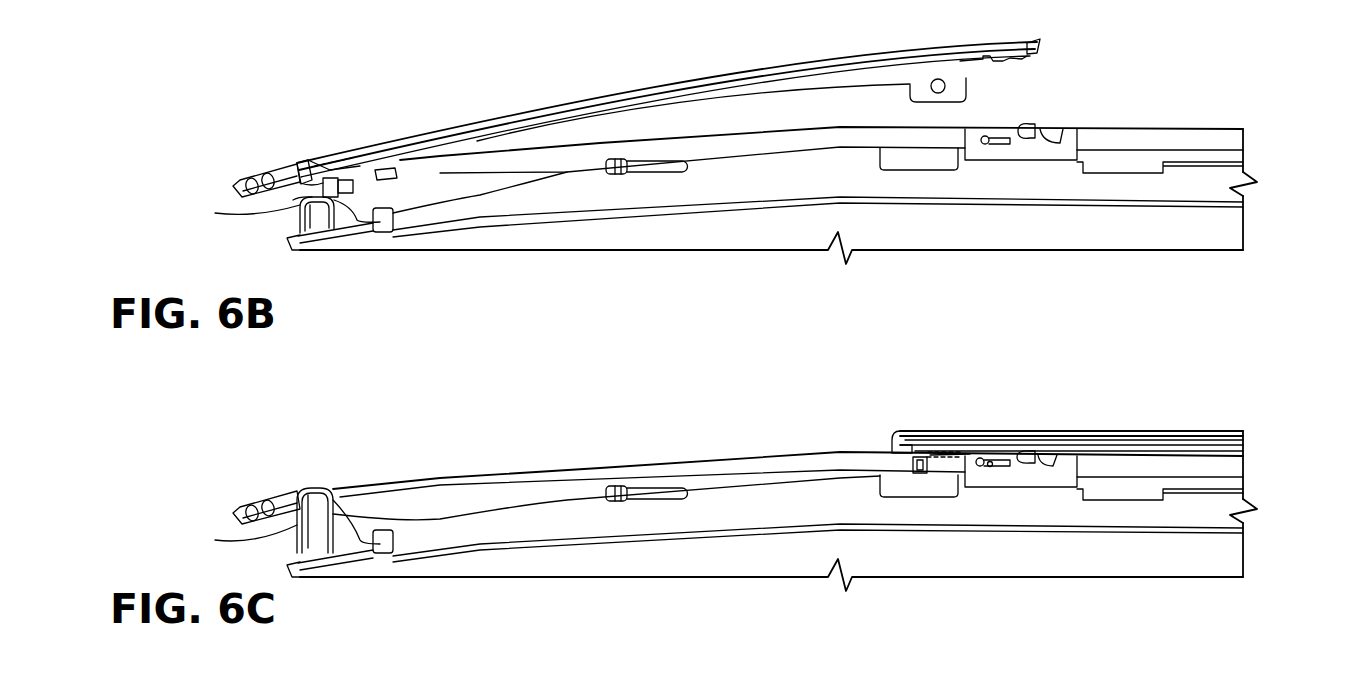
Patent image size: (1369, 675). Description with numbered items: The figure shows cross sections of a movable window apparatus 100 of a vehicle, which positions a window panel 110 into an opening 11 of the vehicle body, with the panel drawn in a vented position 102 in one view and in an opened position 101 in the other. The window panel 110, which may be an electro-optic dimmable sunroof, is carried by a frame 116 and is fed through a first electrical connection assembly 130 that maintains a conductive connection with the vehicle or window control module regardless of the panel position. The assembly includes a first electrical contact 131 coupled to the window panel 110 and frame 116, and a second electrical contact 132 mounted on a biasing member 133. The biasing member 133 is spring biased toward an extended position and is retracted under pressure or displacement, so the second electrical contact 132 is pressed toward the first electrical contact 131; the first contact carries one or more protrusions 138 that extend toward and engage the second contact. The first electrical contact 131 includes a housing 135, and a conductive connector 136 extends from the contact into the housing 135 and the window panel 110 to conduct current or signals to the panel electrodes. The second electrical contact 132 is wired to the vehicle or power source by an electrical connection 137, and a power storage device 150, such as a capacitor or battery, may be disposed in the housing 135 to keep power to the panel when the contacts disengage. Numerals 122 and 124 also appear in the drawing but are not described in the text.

In FIG. 6B, the opening 11 is at (1007, 213).
In FIG. 6C, the opening 11 is at (1005, 538).
In FIG. 6B, the movable window apparatus 100 is at (1141, 92).
In FIG. 6C, the movable window apparatus 100 is at (1141, 417).
In FIG. 6C, the opened position 101 is at (653, 474).
In FIG. 6B, the vented position 102 is at (653, 177).
In FIG. 6B, the window panel 110 is at (310, 160).
In FIG. 6C, the window panel 110 is at (918, 433).
In FIG. 6B, the frame 116 is at (293, 162).
In FIG. 6C, the frame 116 is at (900, 447).
In FIG. 6B, the hinge assembly 122 is at (181, 104).
In FIG. 6C, the hinge assembly 122 is at (181, 431).
In FIG. 6B, the mounting bracket 124 is at (303, 218).
In FIG. 6C, the mounting bracket 124 is at (290, 536).
In FIG. 6B, the first electrical connection assembly 130 is at (653, 177).
In FIG. 6C, the first electrical connection assembly 130 is at (653, 474).
In FIG. 6B, the first electrical contact 131 is at (393, 176).
In FIG. 6C, the first electrical contact 131 is at (990, 460).
In FIG. 6B, the second electrical contact 132 is at (332, 234).
In FIG. 6C, the second electrical contact 132 is at (338, 503).
In FIG. 6B, the biasing member 133 is at (254, 247).
In FIG. 6C, the biasing member 133 is at (240, 546).
In FIG. 6B, the housing 135 is at (380, 175).
In FIG. 6C, the housing 135 is at (987, 458).
In FIG. 6B, the conductive connector 136 is at (318, 163).
In FIG. 6C, the conductive connector 136 is at (953, 437).
In FIG. 6B, the electrical connection 137 is at (378, 242).
In FIG. 6C, the electrical connection 137 is at (377, 500).
In FIG. 6B, the protrusions 138 is at (388, 175).
In FIG. 6C, the protrusions 138 is at (973, 457).
In FIG. 6B, the power storage device 150 is at (293, 200).
In FIG. 6C, the power storage device 150 is at (913, 465).